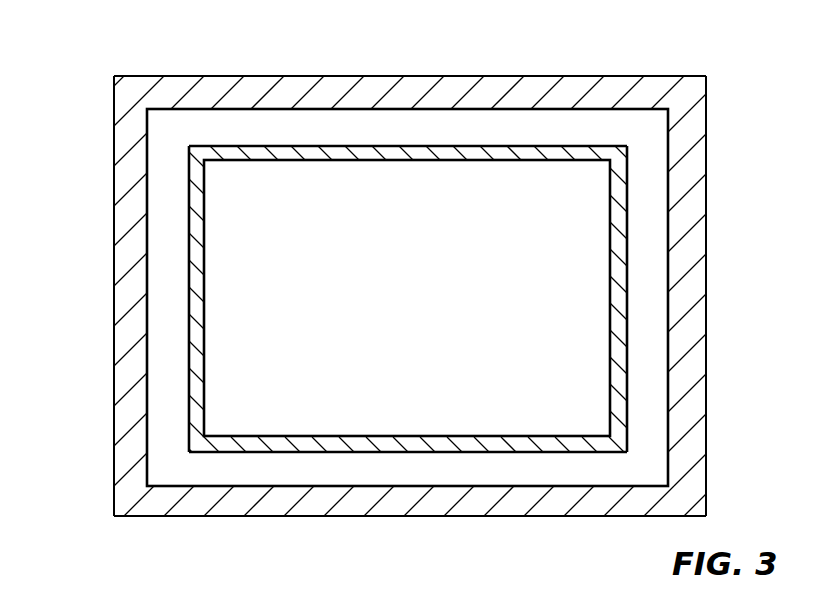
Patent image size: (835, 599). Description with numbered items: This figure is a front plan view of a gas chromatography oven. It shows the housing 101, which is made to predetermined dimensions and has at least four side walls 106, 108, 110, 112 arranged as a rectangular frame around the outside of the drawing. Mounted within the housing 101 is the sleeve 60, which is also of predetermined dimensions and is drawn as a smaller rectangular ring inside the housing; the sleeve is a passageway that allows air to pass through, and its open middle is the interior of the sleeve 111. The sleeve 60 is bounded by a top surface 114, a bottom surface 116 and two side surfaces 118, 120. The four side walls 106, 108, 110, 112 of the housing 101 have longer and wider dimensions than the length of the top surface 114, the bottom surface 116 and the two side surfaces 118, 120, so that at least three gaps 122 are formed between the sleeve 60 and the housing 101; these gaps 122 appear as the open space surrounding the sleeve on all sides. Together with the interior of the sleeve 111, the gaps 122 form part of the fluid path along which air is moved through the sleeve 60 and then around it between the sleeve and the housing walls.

The housing 101 is at (707, 77).
The side wall 106 is at (123, 297).
The side wall 108 is at (690, 172).
The side wall 110 is at (592, 503).
The side wall 112 is at (573, 88).
The sleeve 60 is at (558, 443).
The top surface 114 is at (423, 153).
The bottom surface 116 is at (382, 445).
The side surface 118 is at (197, 315).
The side surface 120 is at (620, 350).
The interior of the sleeve 111 is at (247, 190).
The gaps 122 is at (387, 122).